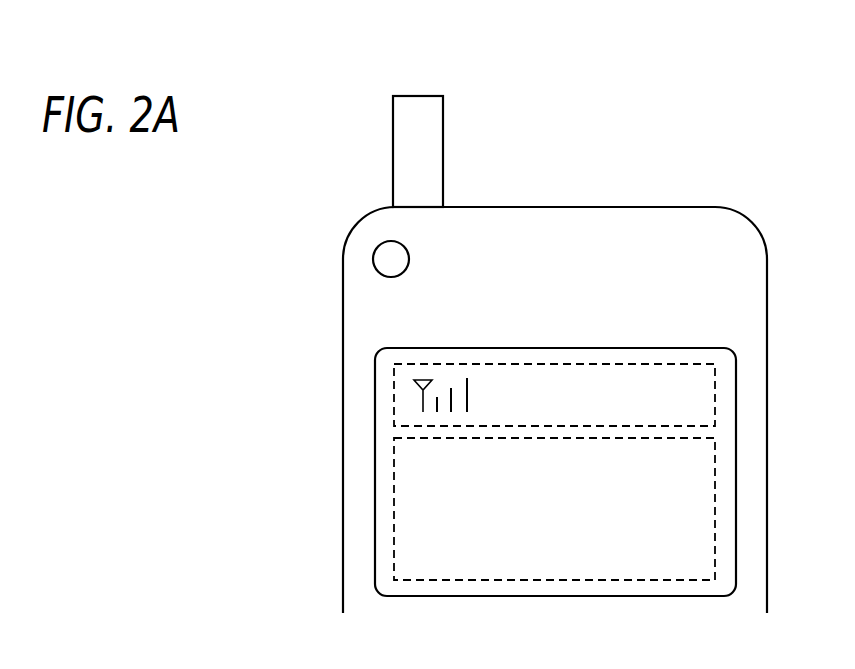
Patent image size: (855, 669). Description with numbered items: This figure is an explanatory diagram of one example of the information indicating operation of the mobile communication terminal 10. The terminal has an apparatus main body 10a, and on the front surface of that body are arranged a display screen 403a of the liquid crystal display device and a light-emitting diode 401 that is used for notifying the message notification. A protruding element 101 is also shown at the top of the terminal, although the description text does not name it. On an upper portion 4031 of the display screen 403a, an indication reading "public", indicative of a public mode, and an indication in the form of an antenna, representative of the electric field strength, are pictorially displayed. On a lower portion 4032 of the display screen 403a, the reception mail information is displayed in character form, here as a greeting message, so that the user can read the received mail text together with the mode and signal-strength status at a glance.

The mobile communication terminal 10 is at (712, 86).
The apparatus main body 10a is at (556, 207).
The antenna 101 is at (393, 152).
The light-emitting diode 401 is at (373, 261).
The display screen 403a is at (561, 347).
The upper portion 4031 is at (394, 398).
The lower portion 4032 is at (394, 512).